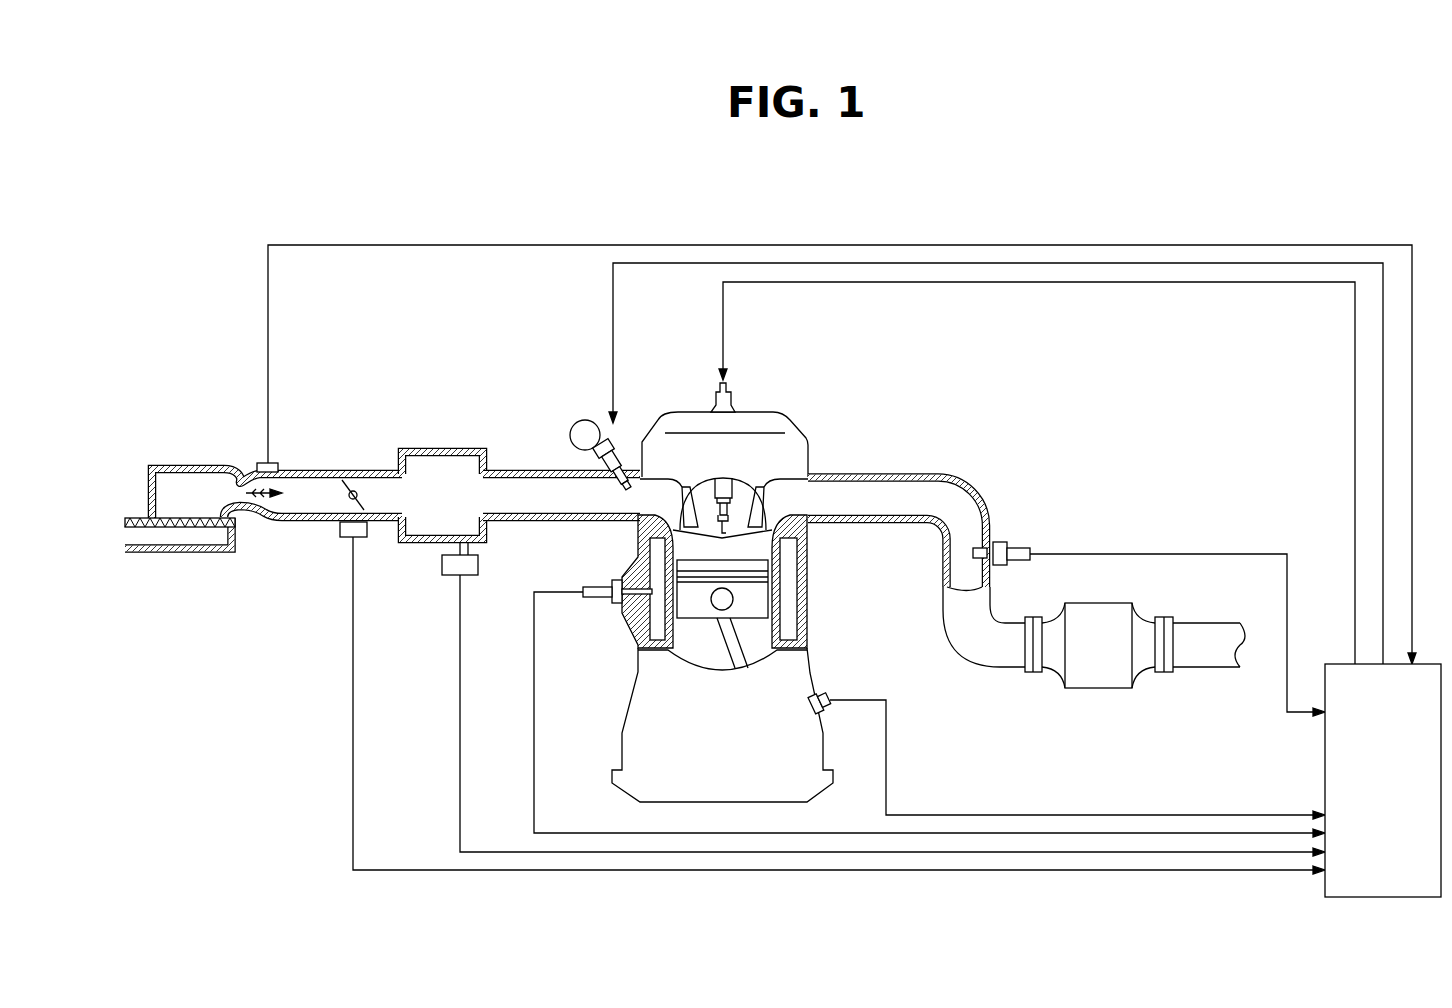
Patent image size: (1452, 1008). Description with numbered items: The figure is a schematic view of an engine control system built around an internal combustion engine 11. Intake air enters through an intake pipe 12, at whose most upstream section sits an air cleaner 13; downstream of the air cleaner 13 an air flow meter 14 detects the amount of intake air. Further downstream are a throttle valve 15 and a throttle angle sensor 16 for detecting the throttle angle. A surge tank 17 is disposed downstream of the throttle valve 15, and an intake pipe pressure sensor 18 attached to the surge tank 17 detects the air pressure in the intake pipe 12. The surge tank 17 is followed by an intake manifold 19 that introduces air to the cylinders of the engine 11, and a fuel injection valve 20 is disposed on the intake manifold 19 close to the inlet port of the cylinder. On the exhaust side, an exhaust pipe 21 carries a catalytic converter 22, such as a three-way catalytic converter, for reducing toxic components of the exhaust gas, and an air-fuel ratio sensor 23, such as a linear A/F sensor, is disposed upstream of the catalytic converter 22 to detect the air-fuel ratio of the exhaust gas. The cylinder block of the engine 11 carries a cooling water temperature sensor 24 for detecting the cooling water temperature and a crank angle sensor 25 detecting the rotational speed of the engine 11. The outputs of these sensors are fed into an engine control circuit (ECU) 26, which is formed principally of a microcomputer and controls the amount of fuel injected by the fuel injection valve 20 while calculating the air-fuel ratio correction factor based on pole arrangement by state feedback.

The internal combustion engine 11 is at (797, 418).
The intake pipe 12 is at (305, 465).
The air cleaner 13 is at (195, 520).
The air flow meter 14 is at (263, 462).
The throttle valve 15 is at (375, 506).
The throttle angle sensor 16 is at (345, 540).
The surge tank 17 is at (438, 448).
The intake pipe pressure sensor 18 is at (446, 578).
The intake manifold 19 is at (562, 522).
The fuel injection valve 20 is at (592, 466).
The exhaust pipe 21 is at (928, 472).
The catalytic converter 22 is at (1112, 600).
The air-fuel ratio sensor 23 is at (1002, 541).
The cooling water temperature sensor 24 is at (622, 606).
The crank angle sensor 25 is at (824, 692).
The engine control circuit (ECU) 26 is at (1325, 775).